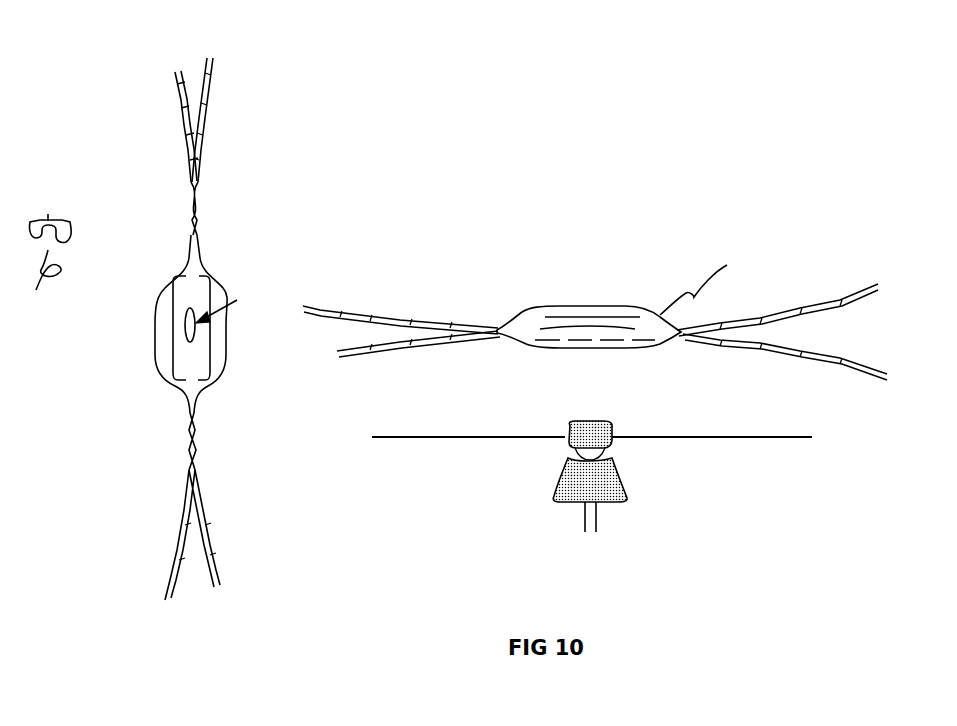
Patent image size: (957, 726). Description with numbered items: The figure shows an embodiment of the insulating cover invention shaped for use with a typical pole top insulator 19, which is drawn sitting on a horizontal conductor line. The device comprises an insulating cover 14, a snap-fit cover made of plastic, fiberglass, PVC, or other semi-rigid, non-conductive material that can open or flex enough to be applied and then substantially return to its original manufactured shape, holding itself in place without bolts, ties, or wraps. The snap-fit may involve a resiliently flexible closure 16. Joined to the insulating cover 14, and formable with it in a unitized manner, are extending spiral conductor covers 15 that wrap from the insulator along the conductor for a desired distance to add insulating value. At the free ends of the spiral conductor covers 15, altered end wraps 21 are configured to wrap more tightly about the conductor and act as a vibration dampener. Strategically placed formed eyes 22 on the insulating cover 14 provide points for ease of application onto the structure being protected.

The altered end wraps 21 is at (165, 63).
The spiral conductor cover 15 is at (173, 127).
The insulating cover 14 is at (68, 213).
The resiliently flexible closure 16 is at (40, 289).
The formed eyes 22 is at (590, 305).
The pole top insulator 19 is at (610, 422).